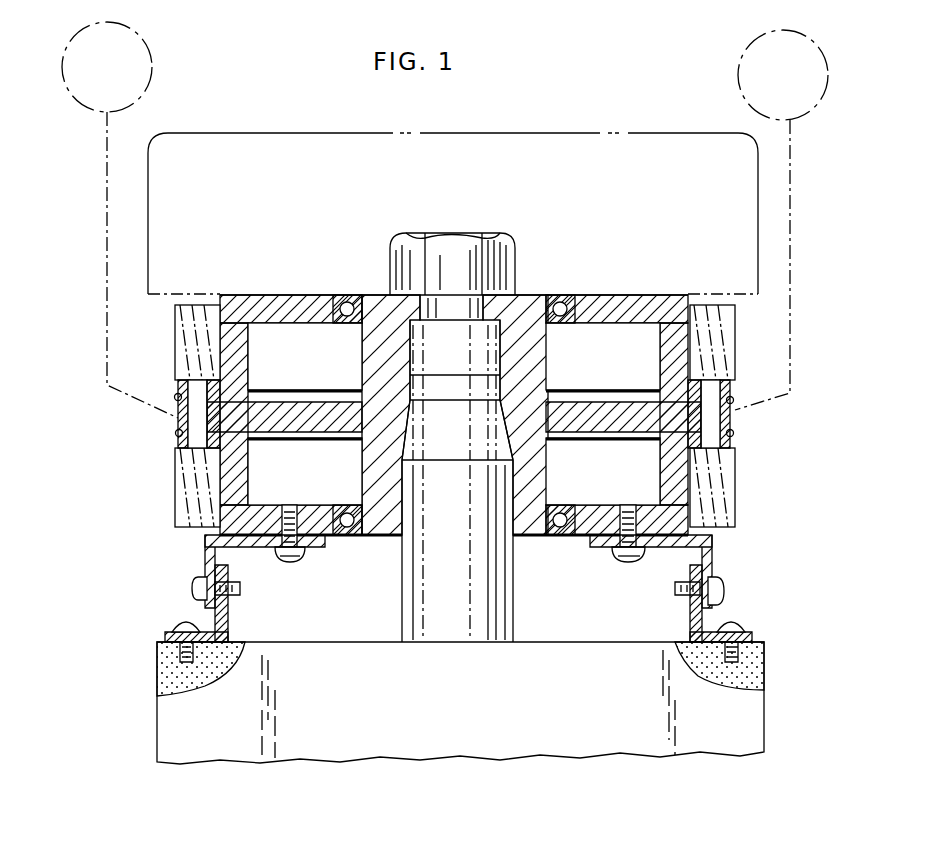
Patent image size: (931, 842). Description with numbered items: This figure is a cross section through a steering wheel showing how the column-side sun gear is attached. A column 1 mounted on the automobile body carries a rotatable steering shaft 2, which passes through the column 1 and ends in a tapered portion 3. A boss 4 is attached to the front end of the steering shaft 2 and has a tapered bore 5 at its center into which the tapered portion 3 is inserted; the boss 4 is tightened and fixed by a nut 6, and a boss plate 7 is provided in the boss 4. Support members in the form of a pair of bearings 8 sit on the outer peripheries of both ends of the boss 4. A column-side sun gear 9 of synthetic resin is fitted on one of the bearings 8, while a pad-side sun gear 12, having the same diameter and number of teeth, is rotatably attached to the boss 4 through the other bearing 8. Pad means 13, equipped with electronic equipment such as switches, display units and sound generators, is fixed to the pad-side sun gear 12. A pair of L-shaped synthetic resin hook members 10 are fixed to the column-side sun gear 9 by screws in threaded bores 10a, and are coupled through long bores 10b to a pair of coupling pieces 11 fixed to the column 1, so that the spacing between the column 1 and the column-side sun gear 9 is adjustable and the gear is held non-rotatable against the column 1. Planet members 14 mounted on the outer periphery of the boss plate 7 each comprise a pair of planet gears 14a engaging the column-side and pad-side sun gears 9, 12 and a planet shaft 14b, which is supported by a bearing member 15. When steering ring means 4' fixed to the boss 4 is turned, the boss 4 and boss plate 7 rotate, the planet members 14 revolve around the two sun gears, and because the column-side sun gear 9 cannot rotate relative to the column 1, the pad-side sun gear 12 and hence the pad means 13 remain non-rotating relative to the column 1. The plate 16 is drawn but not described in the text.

The column 1 is at (157, 712).
The steering shaft 2 is at (514, 588).
The tapered portion 3 is at (498, 431).
The boss 4 is at (455, 415).
The steering ring means 4' is at (445, 220).
The tapered bore 5 is at (406, 438).
The nut 6 is at (516, 252).
The boss plate 7 is at (295, 410).
The support members (bearings) 8 is at (341, 295).
The column-side sun gear 9 is at (244, 477).
The hook members 10 is at (210, 560).
The threaded bore 10a is at (288, 550).
The long bore 10b is at (198, 589).
The coupling pieces 11 is at (228, 617).
The pad-side sun gear 12 is at (239, 343).
The pad means 13 is at (233, 147).
The planet members 14 is at (451, 416).
The planet gears 14a is at (176, 328).
The planet shaft 14b is at (178, 388).
The bearing member 15 is at (176, 443).
The mounting plate 16 is at (203, 545).